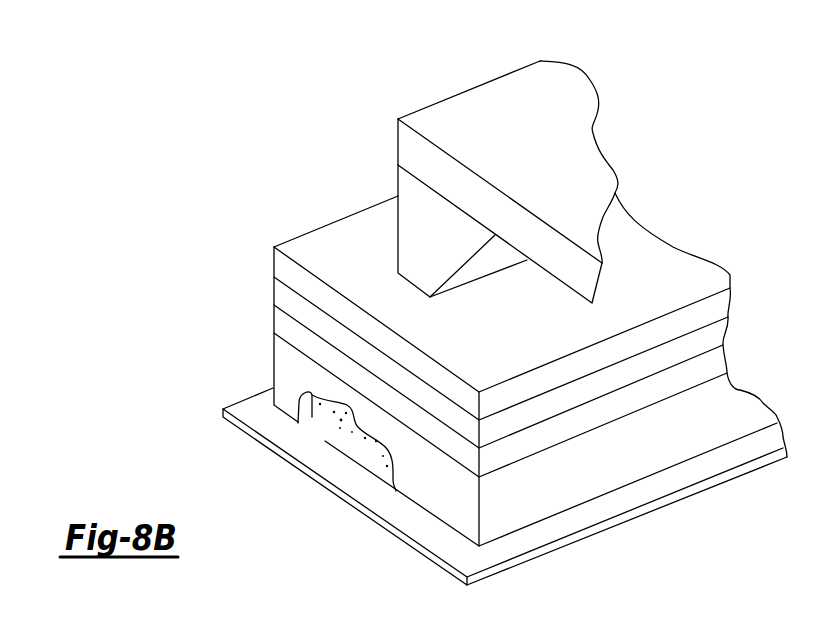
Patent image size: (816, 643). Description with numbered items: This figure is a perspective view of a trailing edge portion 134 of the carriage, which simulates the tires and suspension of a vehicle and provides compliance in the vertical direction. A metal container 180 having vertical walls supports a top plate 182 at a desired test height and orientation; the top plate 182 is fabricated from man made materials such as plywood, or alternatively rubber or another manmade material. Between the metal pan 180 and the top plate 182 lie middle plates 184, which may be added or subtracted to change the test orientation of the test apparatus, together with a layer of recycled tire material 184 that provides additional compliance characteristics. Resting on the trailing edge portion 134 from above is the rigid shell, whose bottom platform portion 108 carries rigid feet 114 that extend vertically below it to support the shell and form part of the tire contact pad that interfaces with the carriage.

The platform portion 108 is at (425, 158).
The rigid feet 114 is at (417, 233).
The trailing edge portion 134 is at (490, 163).
The metal container 180 is at (443, 493).
The top plate 182 is at (494, 339).
The middle plates 184 is at (288, 331).